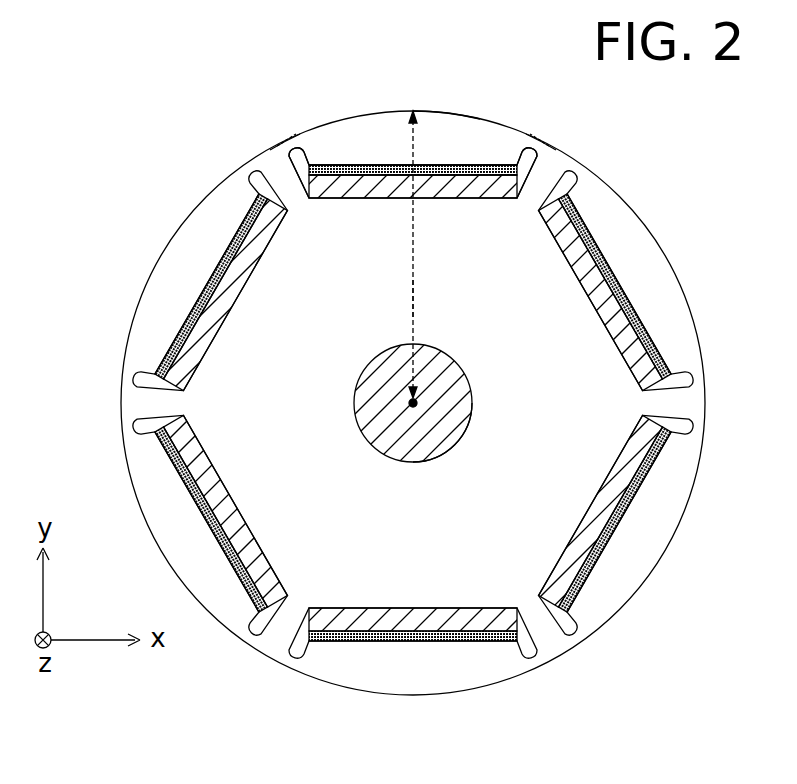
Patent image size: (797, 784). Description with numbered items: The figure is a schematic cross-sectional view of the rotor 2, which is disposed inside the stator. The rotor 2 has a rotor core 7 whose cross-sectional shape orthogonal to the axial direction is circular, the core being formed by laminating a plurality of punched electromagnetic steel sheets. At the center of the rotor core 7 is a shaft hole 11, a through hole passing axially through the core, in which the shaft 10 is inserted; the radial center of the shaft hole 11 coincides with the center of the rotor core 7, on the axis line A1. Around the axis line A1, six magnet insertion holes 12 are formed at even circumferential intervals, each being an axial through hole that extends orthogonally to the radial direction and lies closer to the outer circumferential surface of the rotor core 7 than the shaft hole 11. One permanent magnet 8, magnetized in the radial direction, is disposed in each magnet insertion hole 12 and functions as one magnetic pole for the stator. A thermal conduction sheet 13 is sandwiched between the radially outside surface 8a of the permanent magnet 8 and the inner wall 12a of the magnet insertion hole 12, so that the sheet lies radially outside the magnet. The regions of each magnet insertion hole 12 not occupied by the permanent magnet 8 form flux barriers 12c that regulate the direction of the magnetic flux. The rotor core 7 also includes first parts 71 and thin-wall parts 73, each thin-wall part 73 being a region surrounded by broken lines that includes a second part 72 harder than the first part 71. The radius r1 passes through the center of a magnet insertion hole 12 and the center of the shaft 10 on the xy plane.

The rotor 2 is at (164, 172).
The rotor core 7 is at (399, 116).
The permanent magnet 8 is at (390, 188).
The outside surface of the permanent magnet 8a is at (370, 166).
The shaft 10 is at (410, 462).
The shaft hole 11 is at (455, 441).
The magnet insertion hole 12 is at (460, 194).
The inner wall of the magnet insertion hole 12a is at (482, 166).
The flux barrier 12c is at (305, 200).
The thermal conduction sheet 13 is at (377, 164).
The first part 71 is at (448, 126).
The second part 72 is at (297, 135).
The thin-wall part 73 is at (284, 132).
The radius r1 is at (428, 300).
The axis line A1 is at (418, 403).